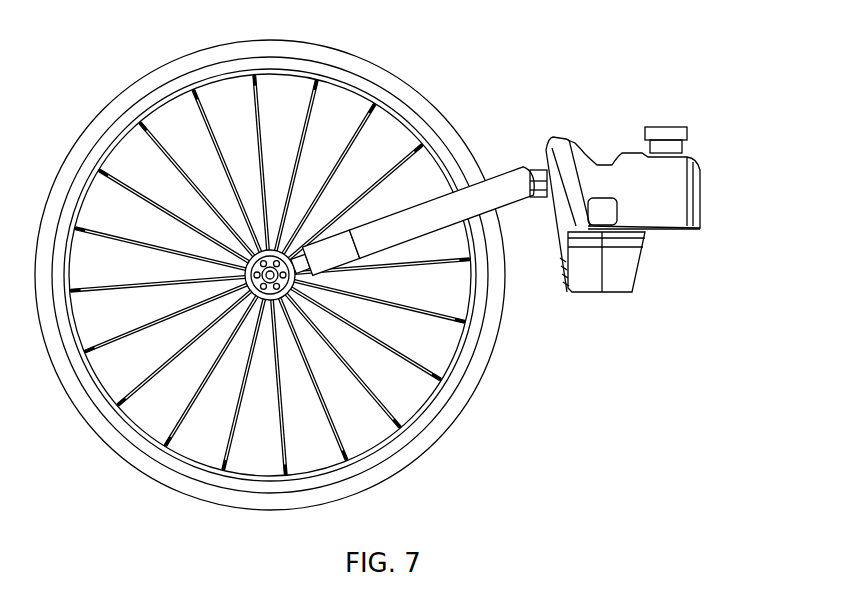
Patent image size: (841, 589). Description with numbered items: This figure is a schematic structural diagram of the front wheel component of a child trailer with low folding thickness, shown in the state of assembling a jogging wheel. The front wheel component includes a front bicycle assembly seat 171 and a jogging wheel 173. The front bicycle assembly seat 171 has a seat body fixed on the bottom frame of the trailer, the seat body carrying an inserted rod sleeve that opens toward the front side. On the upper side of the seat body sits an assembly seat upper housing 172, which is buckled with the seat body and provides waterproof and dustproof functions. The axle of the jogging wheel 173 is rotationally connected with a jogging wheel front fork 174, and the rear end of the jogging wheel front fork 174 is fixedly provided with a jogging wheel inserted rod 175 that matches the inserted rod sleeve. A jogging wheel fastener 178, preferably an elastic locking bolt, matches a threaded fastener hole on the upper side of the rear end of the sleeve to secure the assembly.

The front bicycle assembly seat 171 is at (548, 147).
The assembly seat upper housing 172 is at (650, 183).
The jogging wheel 173 is at (178, 82).
The jogging wheel front fork 174 is at (413, 218).
The jogging wheel inserted rod 175 is at (545, 192).
The jogging wheel fastener 178 is at (667, 133).